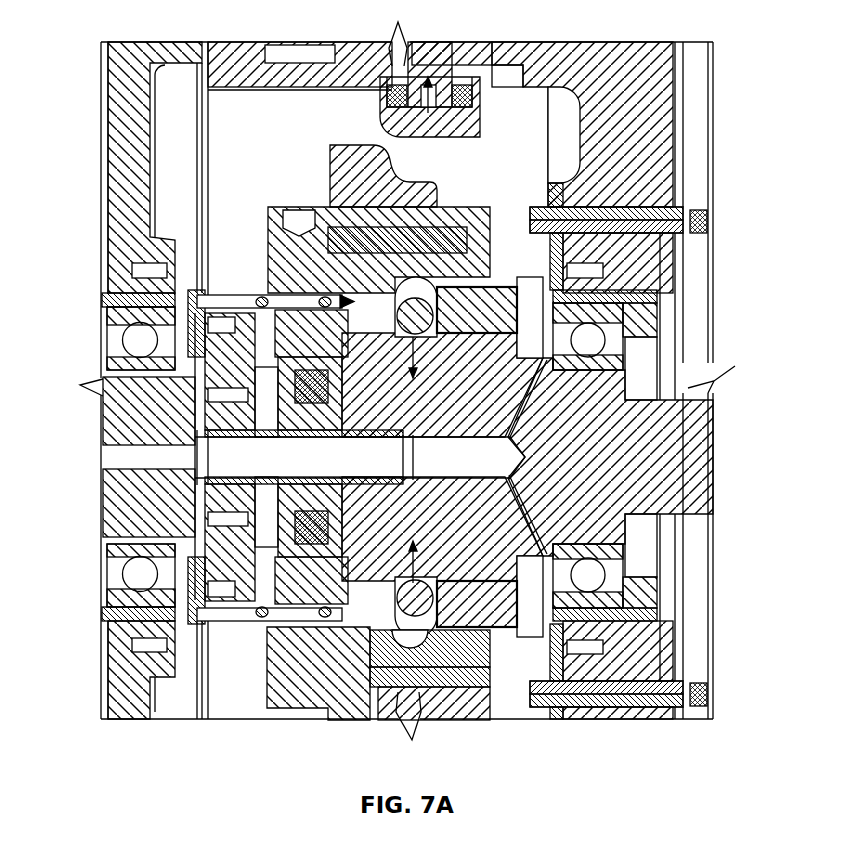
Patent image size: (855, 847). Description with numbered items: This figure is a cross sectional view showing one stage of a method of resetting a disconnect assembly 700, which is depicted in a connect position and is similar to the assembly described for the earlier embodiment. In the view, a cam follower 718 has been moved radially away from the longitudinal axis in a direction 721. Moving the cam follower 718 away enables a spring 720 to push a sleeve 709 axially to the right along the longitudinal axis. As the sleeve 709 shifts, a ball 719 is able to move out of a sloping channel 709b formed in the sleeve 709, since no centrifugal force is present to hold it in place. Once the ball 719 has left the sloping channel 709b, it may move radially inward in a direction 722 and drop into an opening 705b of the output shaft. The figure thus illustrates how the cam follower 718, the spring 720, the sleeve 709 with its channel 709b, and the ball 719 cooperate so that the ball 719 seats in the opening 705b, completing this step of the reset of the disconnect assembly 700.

The disconnect assembly 700 is at (264, 124).
The sleeve 709 is at (303, 253).
The sloping channel 709b is at (408, 605).
The cam follower 718 is at (452, 118).
The direction 721 is at (388, 98).
The spring 720 is at (230, 296).
The direction 722 is at (420, 551).
The ball 719 is at (407, 605).
The opening of the output shaft 705b is at (567, 617).